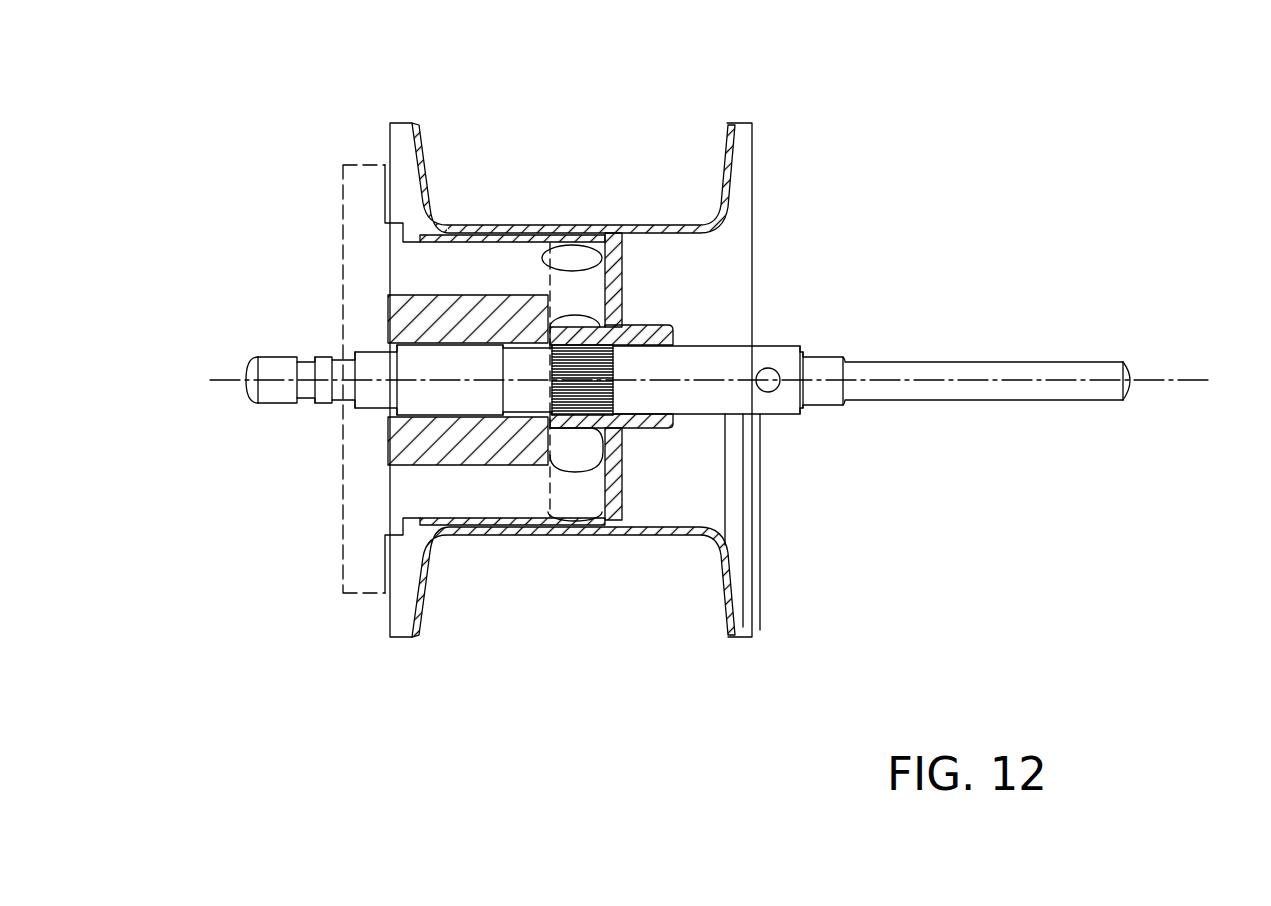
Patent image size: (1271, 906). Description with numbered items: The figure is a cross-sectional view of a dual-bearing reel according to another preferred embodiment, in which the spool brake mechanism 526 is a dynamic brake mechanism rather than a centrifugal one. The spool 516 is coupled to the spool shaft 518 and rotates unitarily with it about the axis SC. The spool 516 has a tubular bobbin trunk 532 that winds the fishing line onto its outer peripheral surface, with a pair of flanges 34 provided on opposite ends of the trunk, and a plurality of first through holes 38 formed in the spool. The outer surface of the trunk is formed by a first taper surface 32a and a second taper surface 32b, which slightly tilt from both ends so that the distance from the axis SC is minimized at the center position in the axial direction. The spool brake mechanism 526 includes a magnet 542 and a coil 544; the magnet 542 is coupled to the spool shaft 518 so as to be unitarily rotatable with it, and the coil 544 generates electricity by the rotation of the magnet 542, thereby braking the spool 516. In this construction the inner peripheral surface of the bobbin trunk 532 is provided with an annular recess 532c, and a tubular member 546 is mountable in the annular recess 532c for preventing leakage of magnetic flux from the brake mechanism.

The flange 34 is at (395, 123).
The first through hole 38 is at (420, 177).
The coil 544 is at (355, 166).
The bobbin trunk 532 is at (468, 203).
The spool brake mechanism 526 is at (478, 275).
The spool 516 is at (627, 202).
The spool shaft 518 is at (713, 332).
The magnet 542 is at (403, 308).
The tubular member 546 is at (470, 527).
The annular recess 532c is at (548, 510).
The first taper surface 32a is at (497, 518).
The second taper surface 32b is at (660, 538).
The axis SC is at (235, 378).